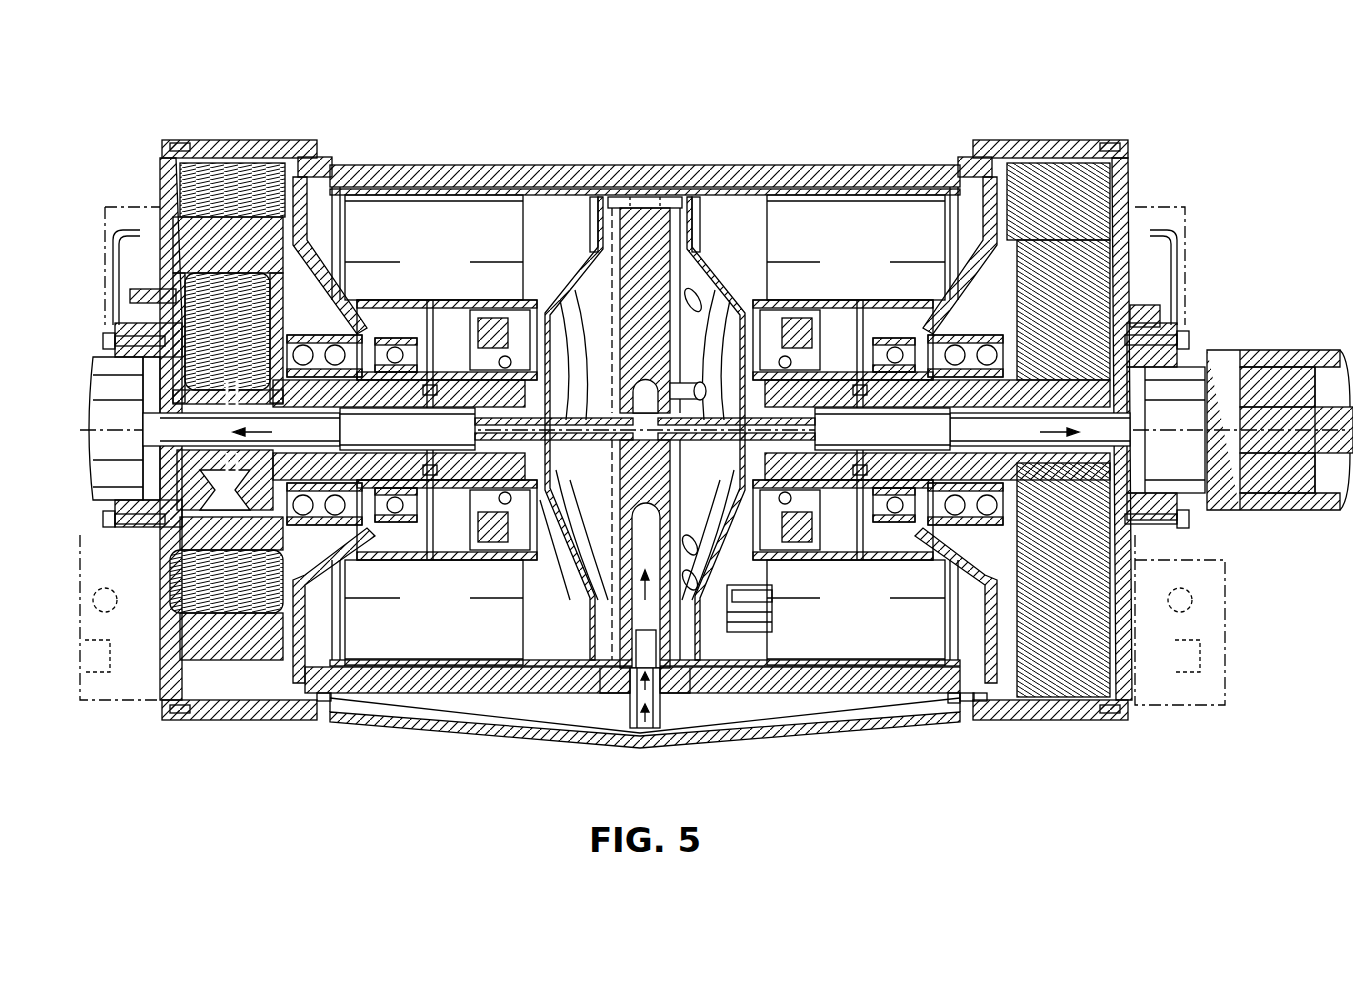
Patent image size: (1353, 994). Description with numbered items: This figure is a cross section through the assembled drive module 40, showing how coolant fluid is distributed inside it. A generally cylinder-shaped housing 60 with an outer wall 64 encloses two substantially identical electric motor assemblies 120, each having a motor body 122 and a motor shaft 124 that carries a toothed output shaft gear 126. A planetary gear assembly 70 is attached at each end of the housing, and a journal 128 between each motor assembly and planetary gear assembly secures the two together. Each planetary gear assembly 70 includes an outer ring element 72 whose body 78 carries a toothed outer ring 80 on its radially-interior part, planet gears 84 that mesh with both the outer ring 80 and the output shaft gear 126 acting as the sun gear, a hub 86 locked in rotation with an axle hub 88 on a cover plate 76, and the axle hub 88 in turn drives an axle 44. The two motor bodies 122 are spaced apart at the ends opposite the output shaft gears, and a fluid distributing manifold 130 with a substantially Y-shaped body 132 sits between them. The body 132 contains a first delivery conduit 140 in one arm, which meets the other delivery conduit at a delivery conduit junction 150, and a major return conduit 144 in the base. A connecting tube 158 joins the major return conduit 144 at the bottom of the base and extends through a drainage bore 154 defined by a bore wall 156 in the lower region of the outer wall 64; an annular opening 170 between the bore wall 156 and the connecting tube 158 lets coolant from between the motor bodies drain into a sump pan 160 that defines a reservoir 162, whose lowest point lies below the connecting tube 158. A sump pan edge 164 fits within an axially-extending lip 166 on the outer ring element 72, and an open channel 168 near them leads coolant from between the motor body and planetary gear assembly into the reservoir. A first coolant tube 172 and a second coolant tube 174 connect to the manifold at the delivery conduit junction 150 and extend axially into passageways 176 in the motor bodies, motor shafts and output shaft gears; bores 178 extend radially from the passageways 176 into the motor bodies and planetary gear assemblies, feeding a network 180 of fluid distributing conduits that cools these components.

The drive module 40 is at (455, 98).
The axle 44 is at (1320, 405).
The housing 60 is at (764, 165).
The outer wall 64 is at (826, 170).
The planetary gear assembly 70 is at (198, 126).
The outer ring element 72 is at (277, 137).
The cover plate 76 is at (162, 162).
The body 78 is at (1012, 140).
The toothed outer ring 80 is at (250, 162).
The planet gear 84 is at (225, 700).
The hub 86 is at (175, 228).
The axle hub 88 is at (108, 372).
The electric motor assembly 120 is at (562, 270).
The motor body 122 is at (698, 264).
The motor shaft 124 is at (1060, 360).
The toothed output shaft gear 126 is at (185, 462).
The journal 128 is at (985, 175).
The fluid distributing manifold 130 is at (651, 210).
The Y-shaped body 132 is at (620, 264).
The first delivery conduit 140 is at (623, 195).
The major return conduit 144 is at (637, 588).
The delivery conduit junction 150 is at (648, 393).
The drainage bore 154 is at (614, 694).
The bore wall 156 is at (680, 694).
The connecting tube 158 is at (645, 730).
The sump pan 160 is at (398, 710).
The reservoir 162 is at (488, 725).
The sump pan edge 164 is at (958, 705).
The lip 166 is at (980, 705).
The open channel 168 is at (322, 705).
The annular opening 170 is at (600, 690).
The first coolant tube 172 is at (545, 520).
The second coolant tube 174 is at (782, 515).
The passageway 176 is at (636, 429).
The bore 178 is at (213, 397).
The network of fluid distributing conduits 180 is at (430, 298).